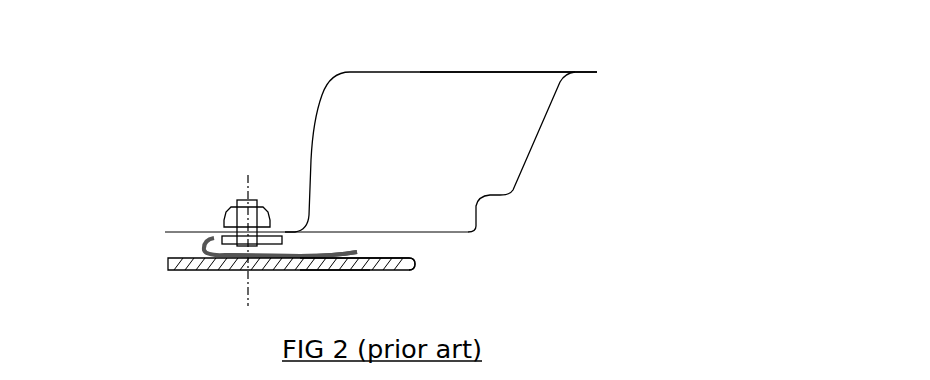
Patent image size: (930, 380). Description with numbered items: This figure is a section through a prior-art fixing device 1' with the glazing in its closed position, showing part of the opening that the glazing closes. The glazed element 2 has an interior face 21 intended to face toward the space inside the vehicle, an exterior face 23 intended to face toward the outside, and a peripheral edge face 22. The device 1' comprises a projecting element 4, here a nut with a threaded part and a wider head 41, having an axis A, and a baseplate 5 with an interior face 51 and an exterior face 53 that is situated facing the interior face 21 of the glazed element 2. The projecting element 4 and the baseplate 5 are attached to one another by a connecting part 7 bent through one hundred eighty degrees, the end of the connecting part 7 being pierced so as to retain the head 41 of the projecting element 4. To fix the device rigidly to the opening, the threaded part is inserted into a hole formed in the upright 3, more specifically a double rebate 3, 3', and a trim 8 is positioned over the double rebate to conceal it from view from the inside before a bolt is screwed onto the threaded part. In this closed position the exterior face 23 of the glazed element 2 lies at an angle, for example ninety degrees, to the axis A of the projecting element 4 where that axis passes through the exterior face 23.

The device 1' is at (116, 81).
The trim 8 is at (327, 76).
The upright 3 is at (381, 152).
The double rebate 3' is at (508, 92).
The projecting element 4 is at (228, 195).
The head 41 is at (237, 238).
The axis A is at (248, 188).
The connecting part 7 is at (210, 240).
The baseplate 5 is at (362, 271).
The interior face 51 is at (337, 253).
The exterior face 53 is at (257, 252).
The glazed element 2 is at (180, 272).
The interior face 21 is at (392, 258).
The peripheral edge face 22 is at (415, 265).
The exterior face 23 is at (335, 271).